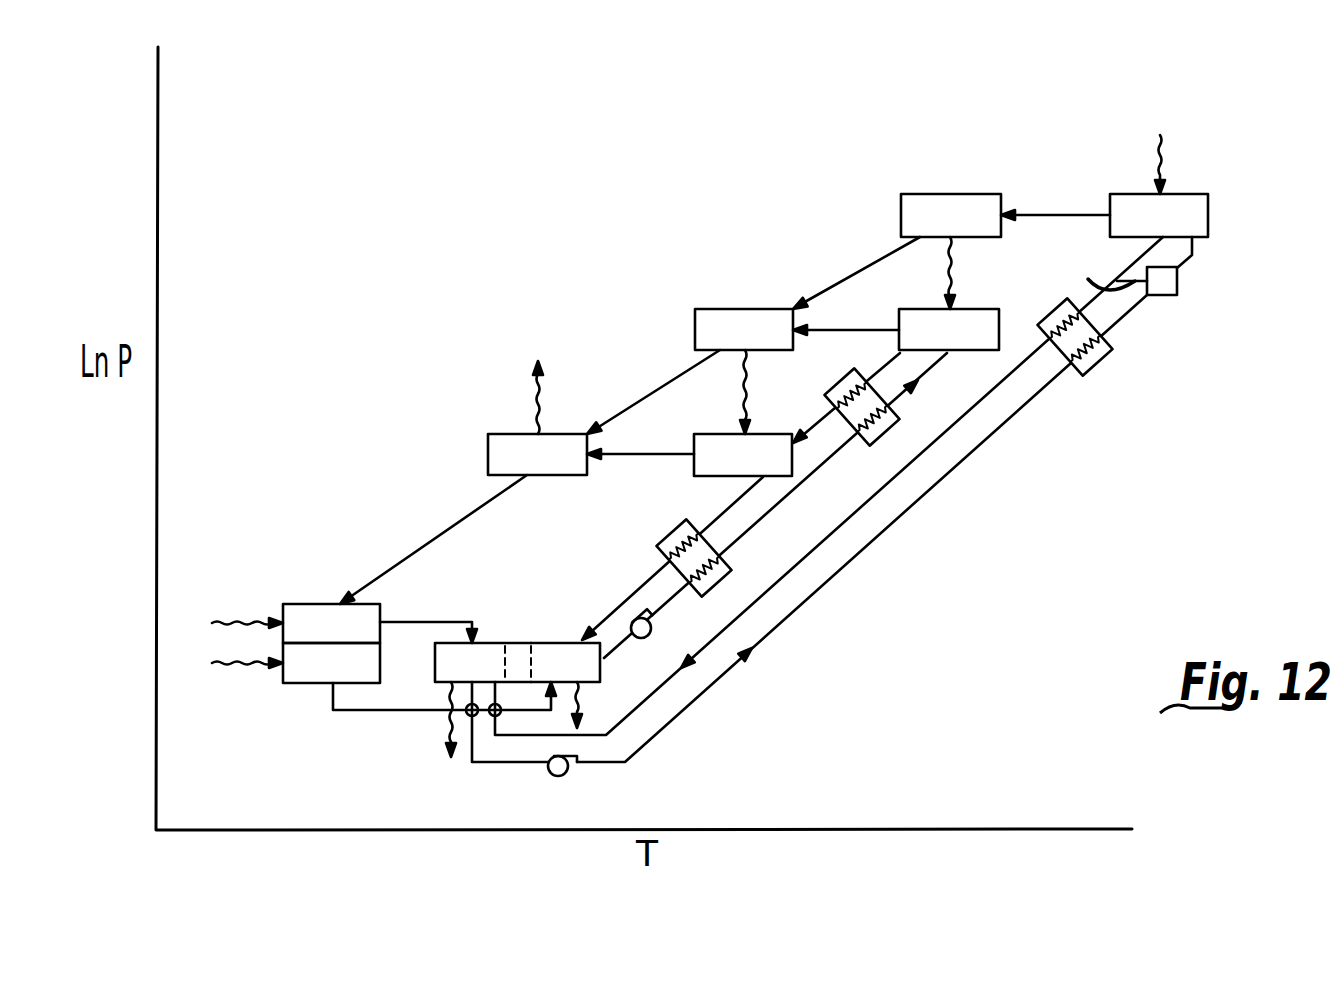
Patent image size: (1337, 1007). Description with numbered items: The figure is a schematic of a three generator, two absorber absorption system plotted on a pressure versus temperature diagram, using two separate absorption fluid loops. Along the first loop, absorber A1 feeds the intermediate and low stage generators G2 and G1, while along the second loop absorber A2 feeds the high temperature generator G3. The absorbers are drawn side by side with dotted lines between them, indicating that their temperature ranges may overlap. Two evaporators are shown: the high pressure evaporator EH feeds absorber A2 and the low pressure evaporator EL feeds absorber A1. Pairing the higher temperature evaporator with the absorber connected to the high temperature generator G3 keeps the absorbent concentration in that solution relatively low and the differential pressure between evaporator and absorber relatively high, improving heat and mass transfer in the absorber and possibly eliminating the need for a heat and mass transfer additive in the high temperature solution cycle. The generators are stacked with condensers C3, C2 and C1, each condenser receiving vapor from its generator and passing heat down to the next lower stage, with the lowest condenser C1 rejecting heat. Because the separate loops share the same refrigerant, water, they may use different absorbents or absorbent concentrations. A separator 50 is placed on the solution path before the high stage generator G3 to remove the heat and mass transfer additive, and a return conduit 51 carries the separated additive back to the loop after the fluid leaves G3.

The separator 50 is at (1177, 278).
The return conduit 51 is at (1104, 268).
The low stage condenser C1 is at (537, 455).
The intermediate stage condenser C2 is at (744, 330).
The high stage condenser C3 is at (951, 215).
The low stage generator G1 is at (743, 455).
The intermediate stage generator G2 is at (949, 330).
The high temperature generator G3 is at (1159, 215).
The high pressure evaporator EH is at (331, 623).
The low pressure evaporator EL is at (331, 663).
The first absorber A1 is at (565, 662).
The second absorber A2 is at (483, 662).